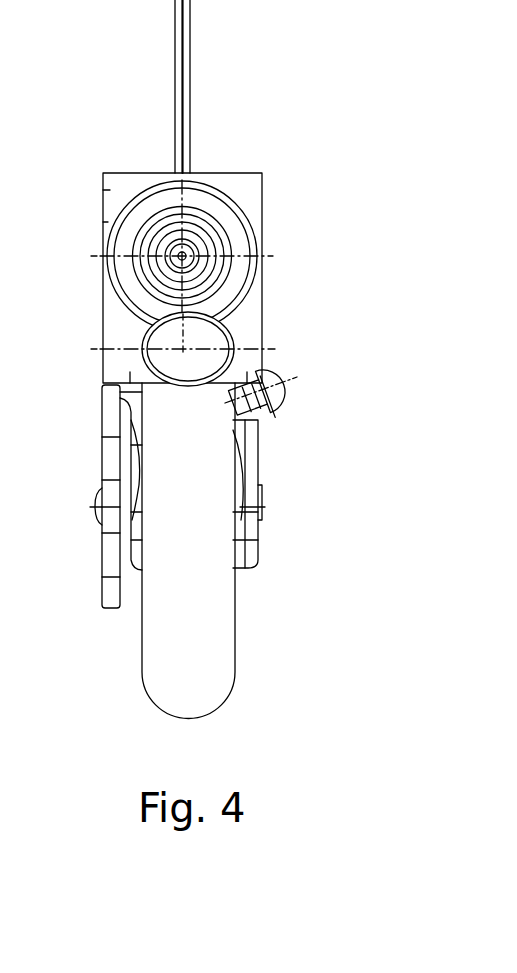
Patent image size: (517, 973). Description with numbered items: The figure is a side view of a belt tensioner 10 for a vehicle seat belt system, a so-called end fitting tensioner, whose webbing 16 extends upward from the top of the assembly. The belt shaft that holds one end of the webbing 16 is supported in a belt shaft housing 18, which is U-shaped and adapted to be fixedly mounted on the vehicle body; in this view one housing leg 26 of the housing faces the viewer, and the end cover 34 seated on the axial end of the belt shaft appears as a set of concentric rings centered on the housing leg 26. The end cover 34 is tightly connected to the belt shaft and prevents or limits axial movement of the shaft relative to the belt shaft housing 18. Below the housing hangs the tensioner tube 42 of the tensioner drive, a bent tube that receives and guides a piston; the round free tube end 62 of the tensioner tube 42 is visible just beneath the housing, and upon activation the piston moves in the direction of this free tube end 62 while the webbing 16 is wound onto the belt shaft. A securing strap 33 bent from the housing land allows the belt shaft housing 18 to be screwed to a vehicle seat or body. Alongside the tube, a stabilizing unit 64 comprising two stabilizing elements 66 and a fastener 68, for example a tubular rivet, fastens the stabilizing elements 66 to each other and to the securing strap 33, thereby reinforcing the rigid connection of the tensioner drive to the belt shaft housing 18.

The belt tensioner 10 is at (99, 100).
The webbing 16 is at (190, 97).
The belt shaft housing 18 is at (120, 333).
The housing leg 26 is at (103, 190).
The securing strap 33 is at (108, 560).
The end cover 34 is at (238, 243).
The tensioner tube 42 is at (217, 650).
The free tube end 62 is at (217, 342).
The stabilizing unit 64 is at (270, 561).
The stabilizing element 66 is at (127, 472).
The fastener 68 is at (98, 517).